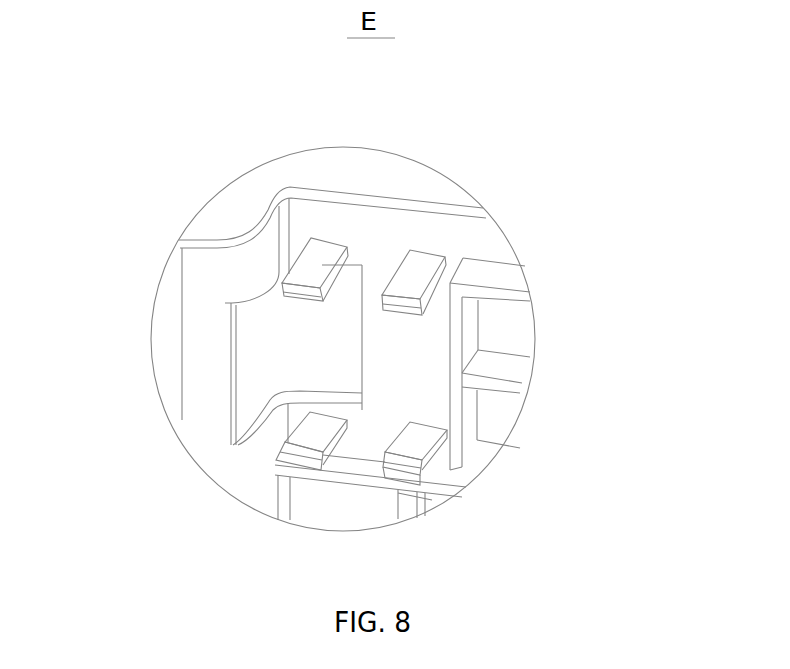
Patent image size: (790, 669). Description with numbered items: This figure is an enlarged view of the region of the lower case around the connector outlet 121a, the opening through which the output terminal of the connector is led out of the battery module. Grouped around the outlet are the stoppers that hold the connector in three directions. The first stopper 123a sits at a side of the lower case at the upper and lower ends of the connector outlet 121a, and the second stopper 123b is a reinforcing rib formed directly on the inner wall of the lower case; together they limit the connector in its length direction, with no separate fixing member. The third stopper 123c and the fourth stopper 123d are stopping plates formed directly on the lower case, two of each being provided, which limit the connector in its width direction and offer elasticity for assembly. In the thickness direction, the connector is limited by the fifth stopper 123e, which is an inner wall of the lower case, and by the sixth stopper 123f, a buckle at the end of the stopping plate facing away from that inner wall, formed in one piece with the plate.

The connector outlet 121a is at (278, 370).
The first stopper 123a is at (283, 222).
The second stopper 123b is at (480, 342).
The third stopper 123c is at (420, 273).
The fourth stopper 123d is at (430, 435).
The fifth stopper 123e is at (402, 228).
The sixth stopper 123f is at (405, 455).